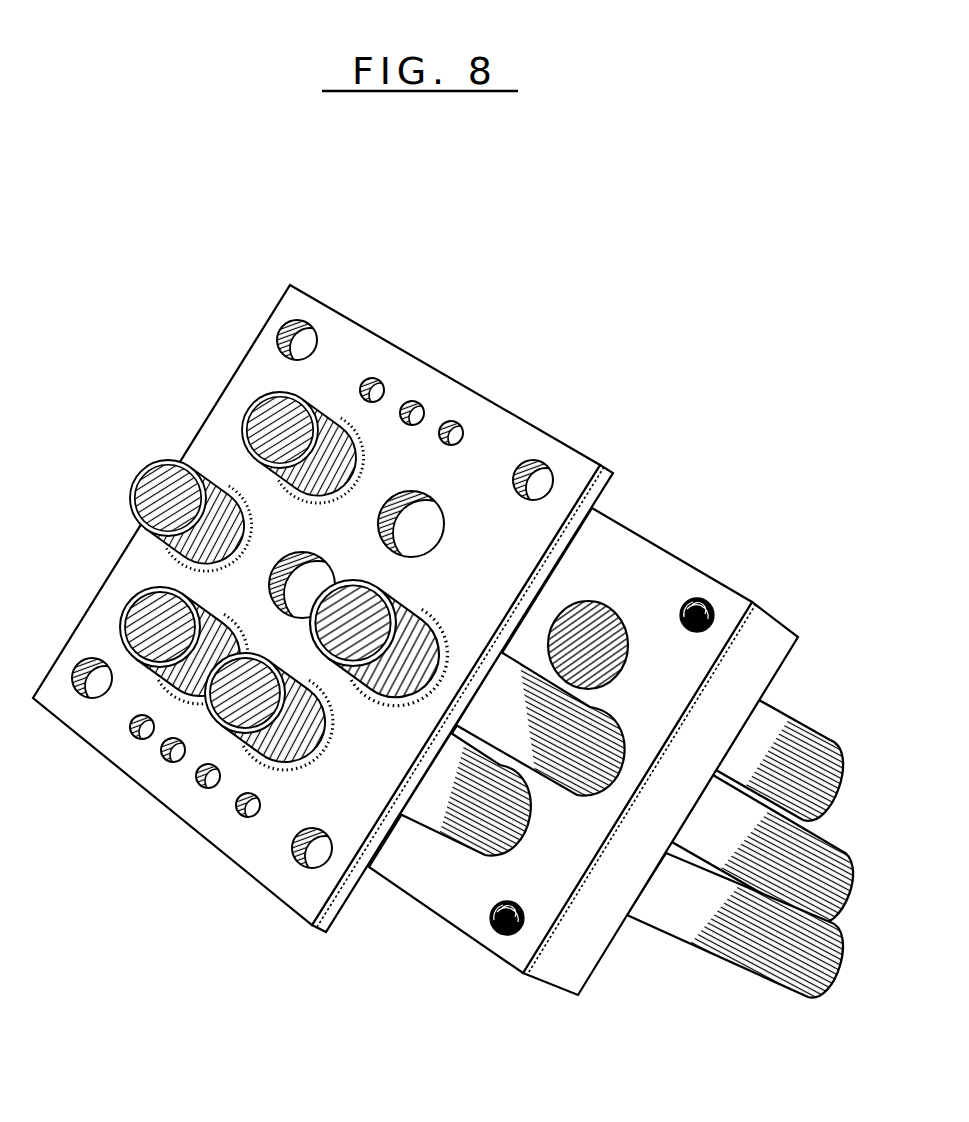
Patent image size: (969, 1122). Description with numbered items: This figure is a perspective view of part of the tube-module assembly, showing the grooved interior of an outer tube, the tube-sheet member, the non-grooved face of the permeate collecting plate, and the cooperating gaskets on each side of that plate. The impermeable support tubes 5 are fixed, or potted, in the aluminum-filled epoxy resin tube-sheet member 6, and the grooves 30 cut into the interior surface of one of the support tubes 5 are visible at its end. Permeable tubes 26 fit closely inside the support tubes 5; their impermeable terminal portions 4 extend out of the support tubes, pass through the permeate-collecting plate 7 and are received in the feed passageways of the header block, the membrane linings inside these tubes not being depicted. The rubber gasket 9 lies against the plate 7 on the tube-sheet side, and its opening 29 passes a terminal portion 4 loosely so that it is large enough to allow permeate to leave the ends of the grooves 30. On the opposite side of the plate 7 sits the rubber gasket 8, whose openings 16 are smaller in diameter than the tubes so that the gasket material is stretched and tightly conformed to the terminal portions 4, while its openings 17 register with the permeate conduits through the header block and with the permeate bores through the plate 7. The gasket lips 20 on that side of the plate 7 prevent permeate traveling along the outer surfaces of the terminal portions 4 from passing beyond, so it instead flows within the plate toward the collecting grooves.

The terminal impermeable portions 4 is at (323, 629).
The impermeable support tubes 5 is at (771, 981).
The tube-sheet member 6 is at (583, 765).
The permeate-collecting plate 7 is at (329, 936).
The gasket 8 is at (304, 927).
The gasket 9 is at (522, 977).
The gasket openings 16 is at (418, 527).
The openings 17 is at (383, 388).
The gasket lips 20 is at (415, 597).
The permeable tubes 26 is at (552, 778).
The opening 29 is at (610, 628).
The grooves 30 is at (600, 620).